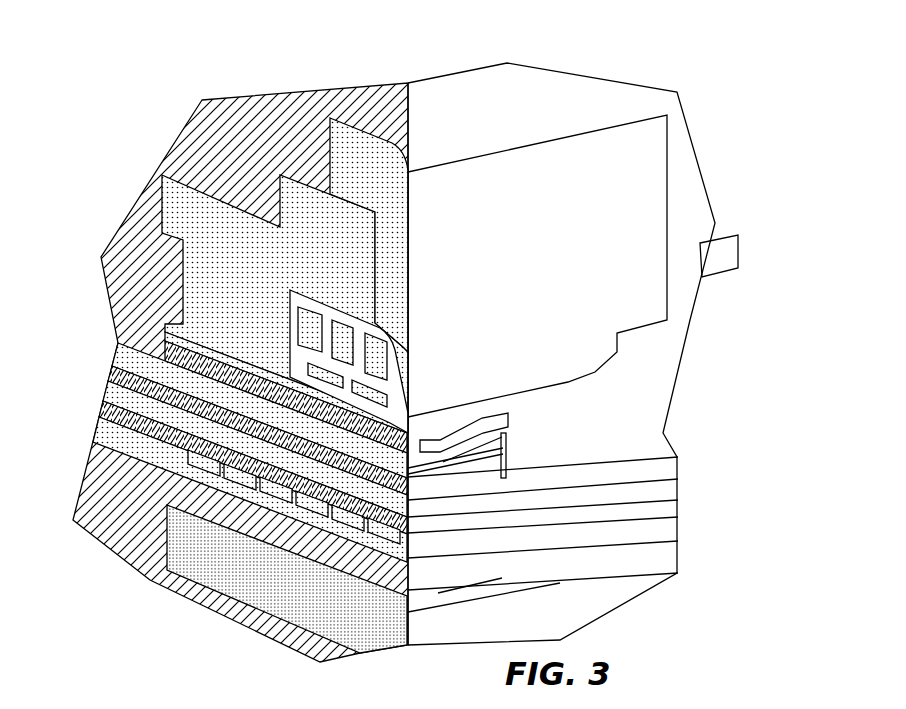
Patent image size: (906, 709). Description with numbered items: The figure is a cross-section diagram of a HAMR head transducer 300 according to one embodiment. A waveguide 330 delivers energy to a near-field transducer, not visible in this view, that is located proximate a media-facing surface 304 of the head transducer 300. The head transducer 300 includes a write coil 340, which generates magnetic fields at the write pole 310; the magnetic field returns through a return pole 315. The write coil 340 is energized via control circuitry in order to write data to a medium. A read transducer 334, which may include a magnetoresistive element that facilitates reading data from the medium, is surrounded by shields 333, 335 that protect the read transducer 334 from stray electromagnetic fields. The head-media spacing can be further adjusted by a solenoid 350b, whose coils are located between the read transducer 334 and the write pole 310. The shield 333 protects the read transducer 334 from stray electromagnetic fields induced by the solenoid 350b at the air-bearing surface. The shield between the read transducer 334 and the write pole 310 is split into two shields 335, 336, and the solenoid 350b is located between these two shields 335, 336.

The head transducer 300 is at (650, 60).
The media-facing surface 304 is at (732, 267).
The write pole 310 is at (414, 443).
The return pole 315 is at (408, 273).
The waveguide 330 is at (118, 343).
The shield 333 is at (382, 640).
The read transducer 334 is at (495, 580).
The shield 335 is at (672, 522).
The shield 336 is at (672, 490).
The write coil 340 is at (387, 352).
The solenoid 350b is at (187, 452).